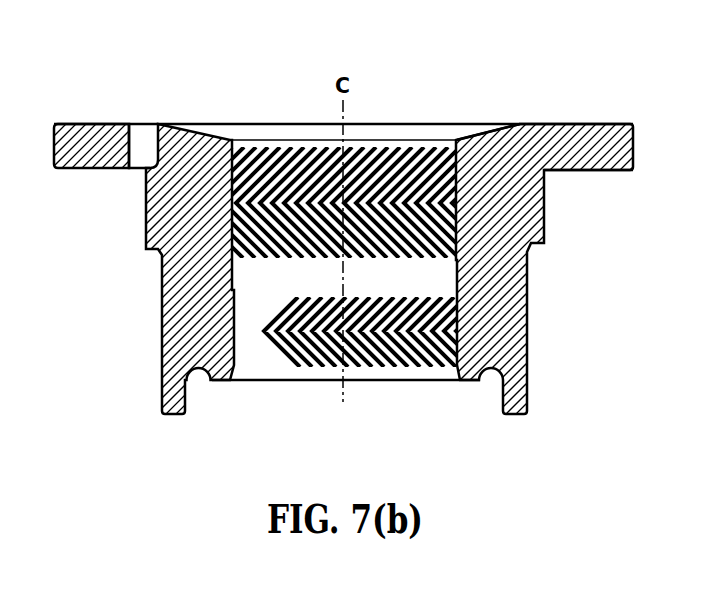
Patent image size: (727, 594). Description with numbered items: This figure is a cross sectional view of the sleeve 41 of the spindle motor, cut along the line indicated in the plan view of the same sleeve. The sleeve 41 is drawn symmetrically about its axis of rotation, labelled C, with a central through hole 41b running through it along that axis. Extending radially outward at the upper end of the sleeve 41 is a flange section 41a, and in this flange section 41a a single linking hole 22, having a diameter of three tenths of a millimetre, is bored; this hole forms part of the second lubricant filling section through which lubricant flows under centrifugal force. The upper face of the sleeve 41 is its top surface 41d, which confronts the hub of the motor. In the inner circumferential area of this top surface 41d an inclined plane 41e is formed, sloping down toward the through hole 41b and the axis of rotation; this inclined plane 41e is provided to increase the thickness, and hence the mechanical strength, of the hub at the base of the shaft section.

The linking hole 22 is at (138, 142).
The sleeve 41 is at (497, 280).
The flange section 41a is at (90, 158).
The through hole 41b is at (367, 372).
The top surface 41d is at (605, 124).
The inclined plane 41e is at (492, 131).